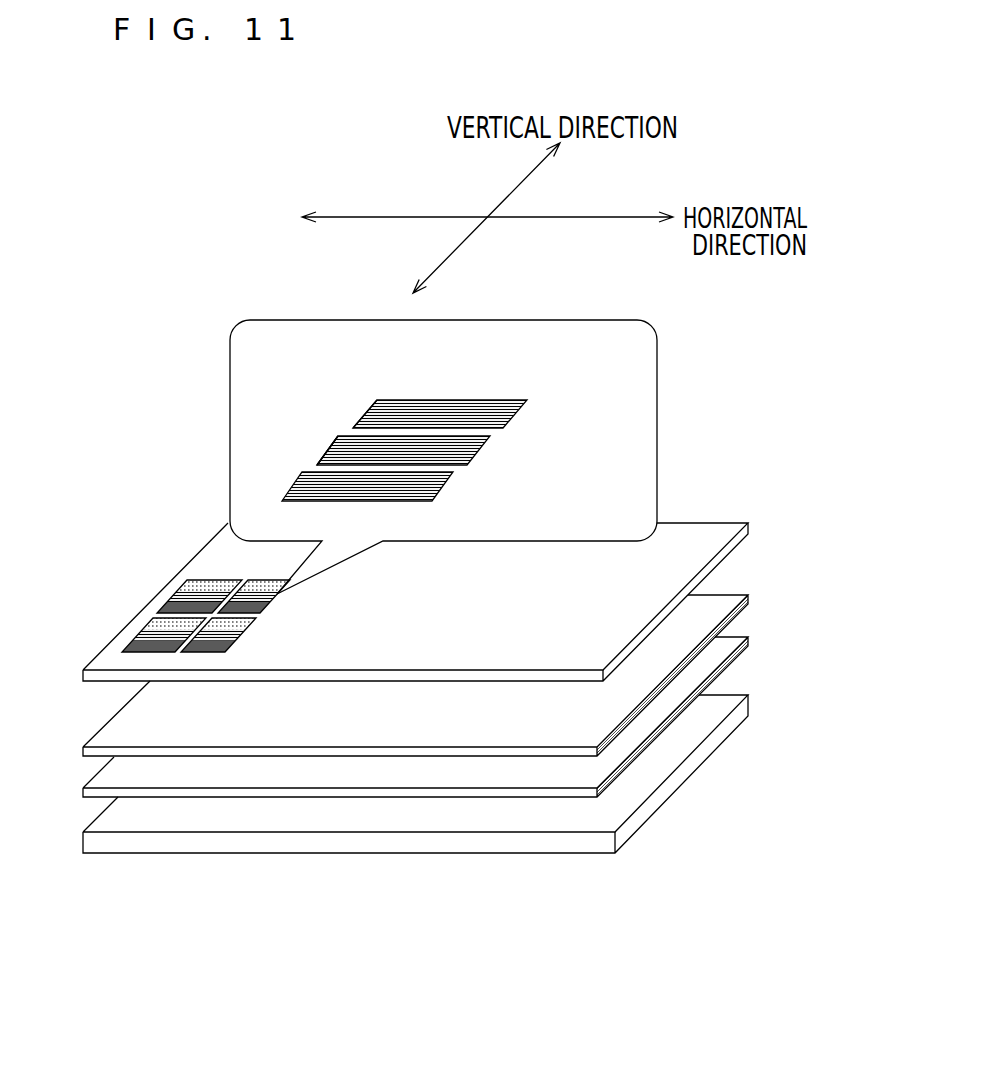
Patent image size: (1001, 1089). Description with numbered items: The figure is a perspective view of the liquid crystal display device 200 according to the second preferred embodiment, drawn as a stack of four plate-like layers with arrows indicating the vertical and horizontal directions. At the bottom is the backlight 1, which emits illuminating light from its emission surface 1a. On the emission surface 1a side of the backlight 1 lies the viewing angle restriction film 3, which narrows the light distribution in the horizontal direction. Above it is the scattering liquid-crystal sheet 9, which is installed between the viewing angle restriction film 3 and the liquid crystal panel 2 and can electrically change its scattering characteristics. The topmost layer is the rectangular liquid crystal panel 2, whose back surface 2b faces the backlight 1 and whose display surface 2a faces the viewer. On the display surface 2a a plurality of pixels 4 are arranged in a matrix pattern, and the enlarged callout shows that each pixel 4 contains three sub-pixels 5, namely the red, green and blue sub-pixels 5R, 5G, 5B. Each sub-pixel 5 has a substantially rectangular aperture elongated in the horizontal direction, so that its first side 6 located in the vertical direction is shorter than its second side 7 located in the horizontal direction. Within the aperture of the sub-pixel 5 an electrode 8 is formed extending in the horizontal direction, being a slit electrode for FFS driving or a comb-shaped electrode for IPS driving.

The backlight 1 is at (396, 776).
The emission surface 1a is at (102, 823).
The liquid crystal panel 2 is at (395, 617).
The display surface 2a is at (102, 663).
The back surface 2b is at (98, 683).
The viewing angle restriction film 3 is at (103, 778).
The pixel 4 is at (266, 617).
The sub-pixel 5 is at (446, 453).
The red sub-pixel 5R is at (522, 413).
The green sub-pixel 5G is at (483, 449).
The blue sub-pixel 5B is at (450, 486).
The first side 6 is at (337, 447).
The second side 7 is at (352, 435).
The electrode 8 is at (340, 440).
The scattering liquid-crystal sheet 9 is at (102, 735).
The liquid crystal display device 200 is at (760, 507).